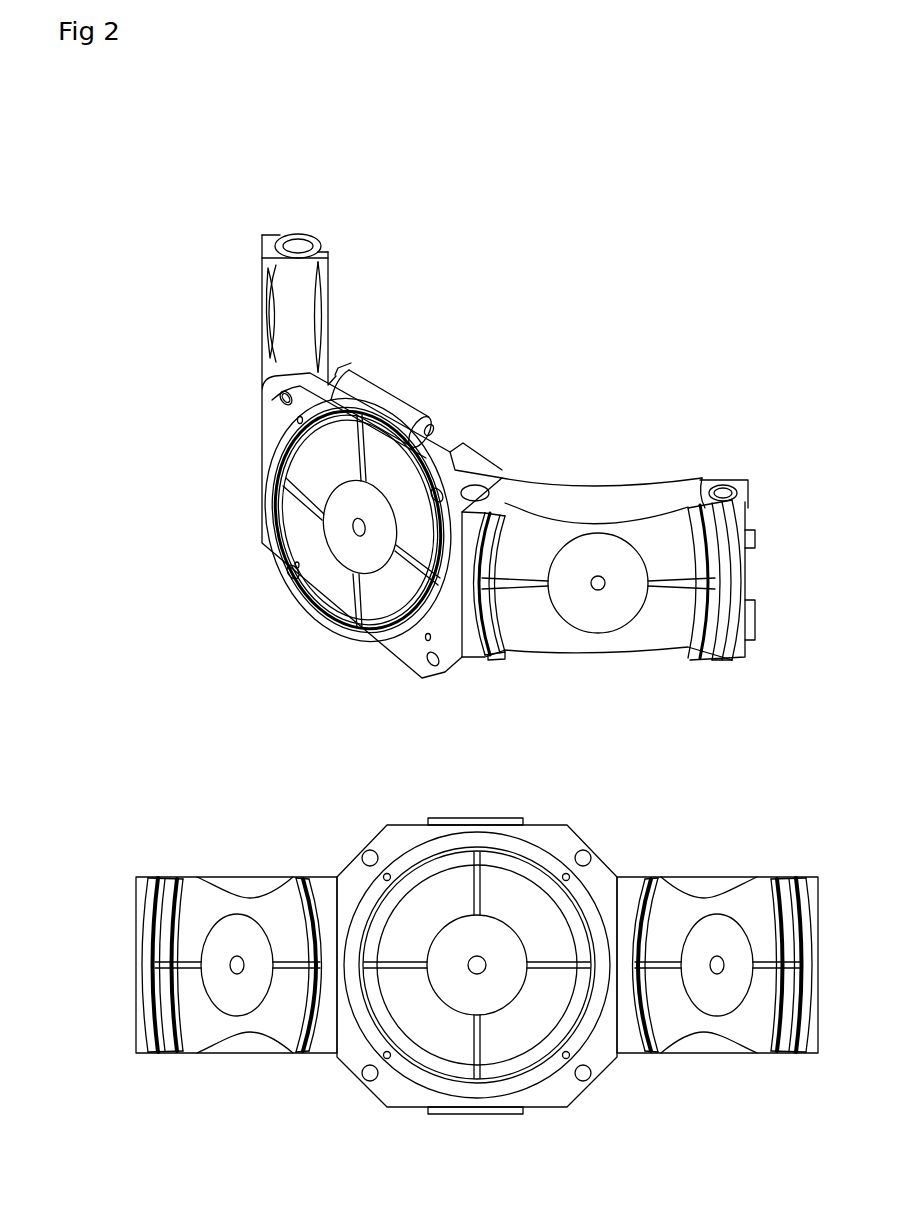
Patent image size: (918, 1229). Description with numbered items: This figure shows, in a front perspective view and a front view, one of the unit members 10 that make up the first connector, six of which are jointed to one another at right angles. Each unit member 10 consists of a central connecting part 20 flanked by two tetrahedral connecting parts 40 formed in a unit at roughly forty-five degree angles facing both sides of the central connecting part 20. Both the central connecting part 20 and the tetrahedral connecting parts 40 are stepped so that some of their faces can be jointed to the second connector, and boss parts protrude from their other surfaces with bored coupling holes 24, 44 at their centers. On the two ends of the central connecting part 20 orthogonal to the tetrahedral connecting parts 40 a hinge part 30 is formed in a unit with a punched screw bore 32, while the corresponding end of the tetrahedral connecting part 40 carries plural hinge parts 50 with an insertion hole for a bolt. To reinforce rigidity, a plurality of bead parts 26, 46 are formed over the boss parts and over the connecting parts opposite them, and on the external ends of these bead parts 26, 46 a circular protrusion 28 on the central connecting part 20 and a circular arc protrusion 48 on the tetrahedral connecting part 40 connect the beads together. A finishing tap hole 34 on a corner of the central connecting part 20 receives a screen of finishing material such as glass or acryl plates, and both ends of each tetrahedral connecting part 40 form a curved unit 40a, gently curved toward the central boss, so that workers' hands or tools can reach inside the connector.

The unit member 10 is at (542, 345).
The central connecting part 20 is at (296, 617).
The coupling hole 24 is at (355, 528).
The bead part 26 is at (297, 483).
The circular protrusion 28 is at (386, 645).
The hinge part 30 is at (382, 388).
The screw bore 32 is at (436, 432).
The finishing tap hole 34 is at (283, 397).
The tetrahedral connecting part 40 is at (669, 647).
The curved unit 40a is at (585, 493).
The coupling hole 44 is at (600, 590).
The bead part 46 is at (735, 557).
The circular arc protrusion 48 is at (690, 512).
The hinge part 50 is at (748, 617).